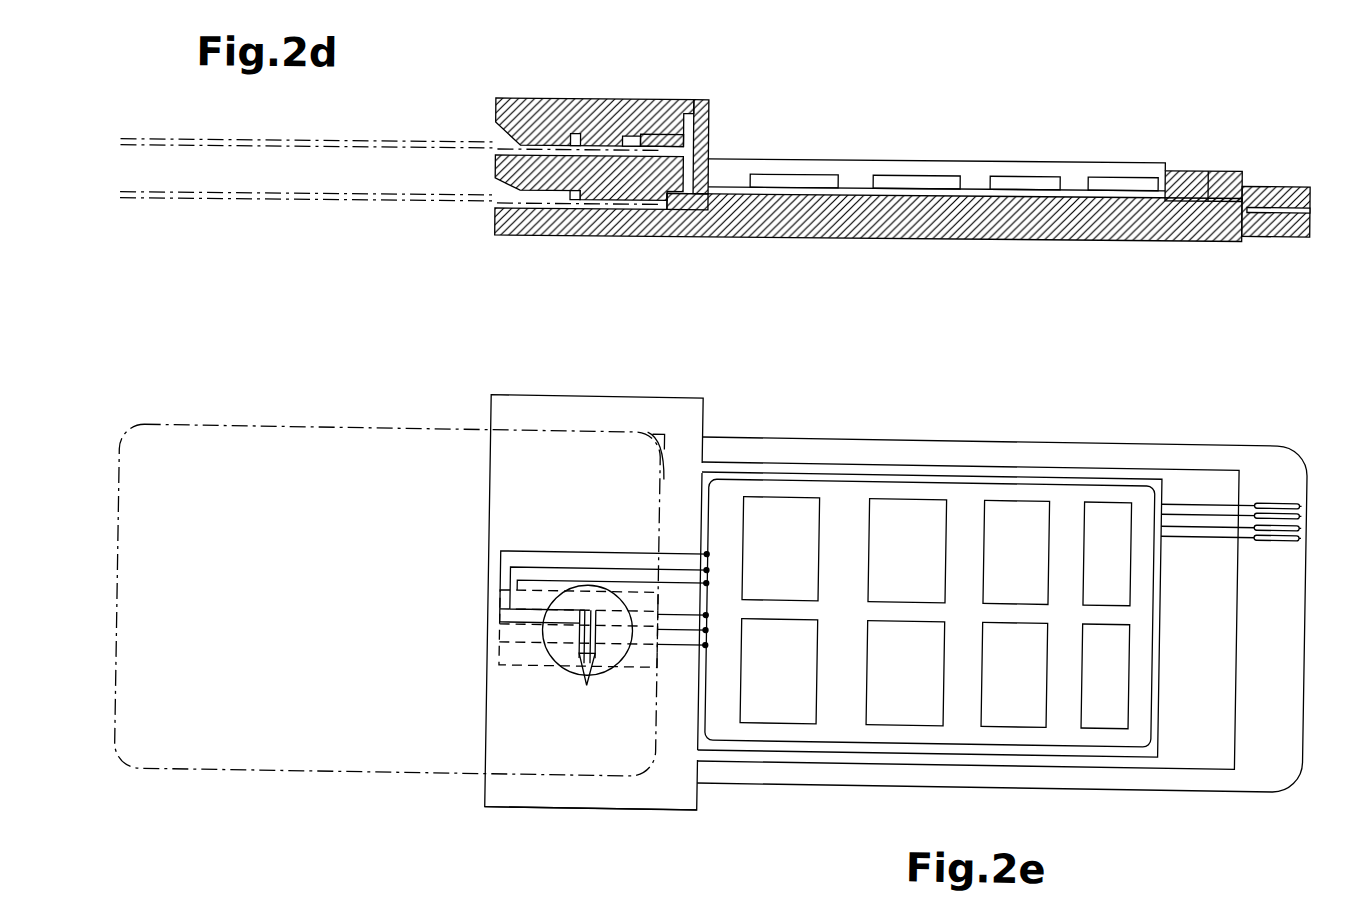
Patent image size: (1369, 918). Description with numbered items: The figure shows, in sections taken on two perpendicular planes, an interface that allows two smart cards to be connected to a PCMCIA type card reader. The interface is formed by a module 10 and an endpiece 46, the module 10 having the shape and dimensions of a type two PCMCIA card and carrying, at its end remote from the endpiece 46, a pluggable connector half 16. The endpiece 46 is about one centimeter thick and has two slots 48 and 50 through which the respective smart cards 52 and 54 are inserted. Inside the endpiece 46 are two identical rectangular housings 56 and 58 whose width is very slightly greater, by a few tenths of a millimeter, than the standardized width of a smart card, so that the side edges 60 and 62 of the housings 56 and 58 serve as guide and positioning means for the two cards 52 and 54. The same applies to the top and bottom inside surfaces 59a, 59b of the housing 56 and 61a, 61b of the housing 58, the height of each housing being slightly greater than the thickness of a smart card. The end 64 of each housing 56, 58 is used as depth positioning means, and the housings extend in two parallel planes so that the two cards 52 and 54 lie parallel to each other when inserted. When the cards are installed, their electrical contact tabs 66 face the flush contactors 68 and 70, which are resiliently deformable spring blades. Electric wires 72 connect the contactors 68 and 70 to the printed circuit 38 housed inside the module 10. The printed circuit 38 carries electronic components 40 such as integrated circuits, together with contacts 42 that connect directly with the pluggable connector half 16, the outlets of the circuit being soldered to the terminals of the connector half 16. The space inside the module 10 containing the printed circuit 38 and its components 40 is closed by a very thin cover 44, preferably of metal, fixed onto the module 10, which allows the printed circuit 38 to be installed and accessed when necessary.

In FIG. 2D, the module 10 is at (941, 153).
In FIG. 2D, the pluggable connector half 16 is at (1293, 178).
In FIG. 2E, the pluggable connector half 16 is at (1260, 463).
In FIG. 2D, the printed circuit 38 is at (975, 185).
In FIG. 2E, the printed circuit 38 is at (968, 510).
In FIG. 2D, the electronic components 40 is at (800, 172).
In FIG. 2E, the electronic components 40 is at (764, 535).
In FIG. 2D, the contacts 42 is at (1215, 180).
In FIG. 2E, the contacts 42 is at (1224, 505).
In FIG. 2D, the cover 44 is at (1140, 165).
In FIG. 2E, the cover 44 is at (1018, 477).
In FIG. 2D, the endpiece 46 is at (698, 98).
In FIG. 2D, the slot 48 is at (497, 135).
In FIG. 2D, the slot 50 is at (497, 200).
In FIG. 2D, the smart card 52 is at (228, 142).
In FIG. 2E, the smart card 52 is at (239, 544).
In FIG. 2D, the smart card 54 is at (238, 203).
In FIG. 2D, the housing 56 is at (600, 135).
In FIG. 2D, the housing 58 is at (600, 222).
In FIG. 2D, the top inside surface 59a is at (512, 97).
In FIG. 2D, the bottom inside surface 59b is at (522, 210).
In FIG. 2E, the side edge 60 is at (548, 398).
In FIG. 2D, the top inside surface 61a is at (655, 133).
In FIG. 2D, the bottom inside surface 61b is at (656, 237).
In FIG. 2E, the side edge 62 is at (548, 812).
In FIG. 2E, the end 64 is at (663, 480).
In FIG. 2E, the electrical contact tabs 66 is at (557, 652).
In FIG. 2D, the flush contactor 68 is at (575, 133).
In FIG. 2E, the flush contactor 68 is at (587, 649).
In FIG. 2D, the flush contactor 70 is at (585, 200).
In FIG. 2E, the electric wires 72 is at (570, 582).